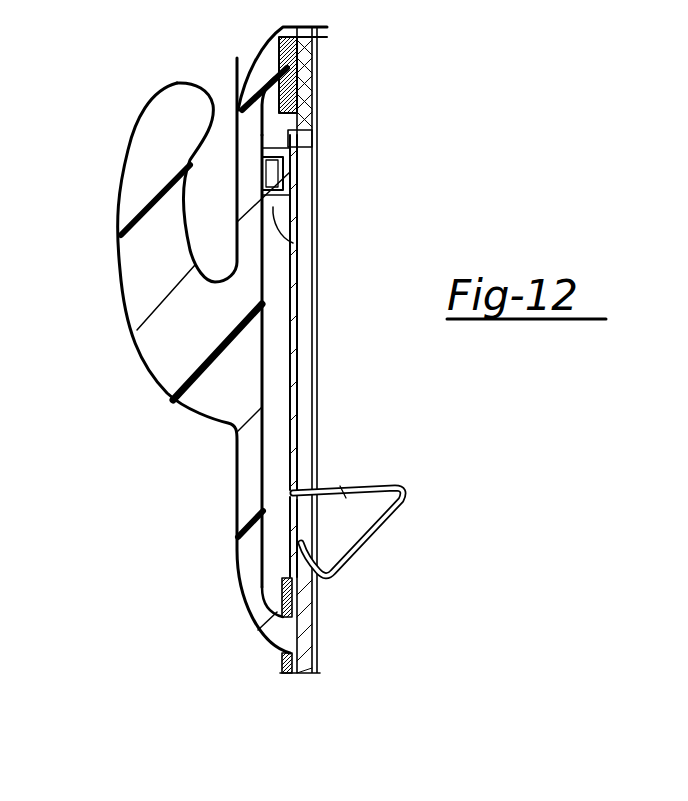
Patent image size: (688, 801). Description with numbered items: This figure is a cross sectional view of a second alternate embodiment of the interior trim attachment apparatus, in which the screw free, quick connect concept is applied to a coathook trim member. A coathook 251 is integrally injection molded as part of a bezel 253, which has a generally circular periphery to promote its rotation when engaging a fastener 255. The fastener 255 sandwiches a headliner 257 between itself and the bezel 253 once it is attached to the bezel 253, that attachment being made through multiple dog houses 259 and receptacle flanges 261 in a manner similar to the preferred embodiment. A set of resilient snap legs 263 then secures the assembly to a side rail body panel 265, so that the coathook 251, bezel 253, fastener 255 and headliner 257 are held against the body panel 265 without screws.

The coathook 251 is at (141, 236).
The bezel 253 is at (238, 60).
The fastener 255 is at (298, 228).
The headliner 257 is at (310, 44).
The dog house 259 is at (274, 150).
The receptacle flange 261 is at (293, 243).
The resilient snap leg 263 is at (378, 527).
The side rail body panel 265 is at (308, 607).